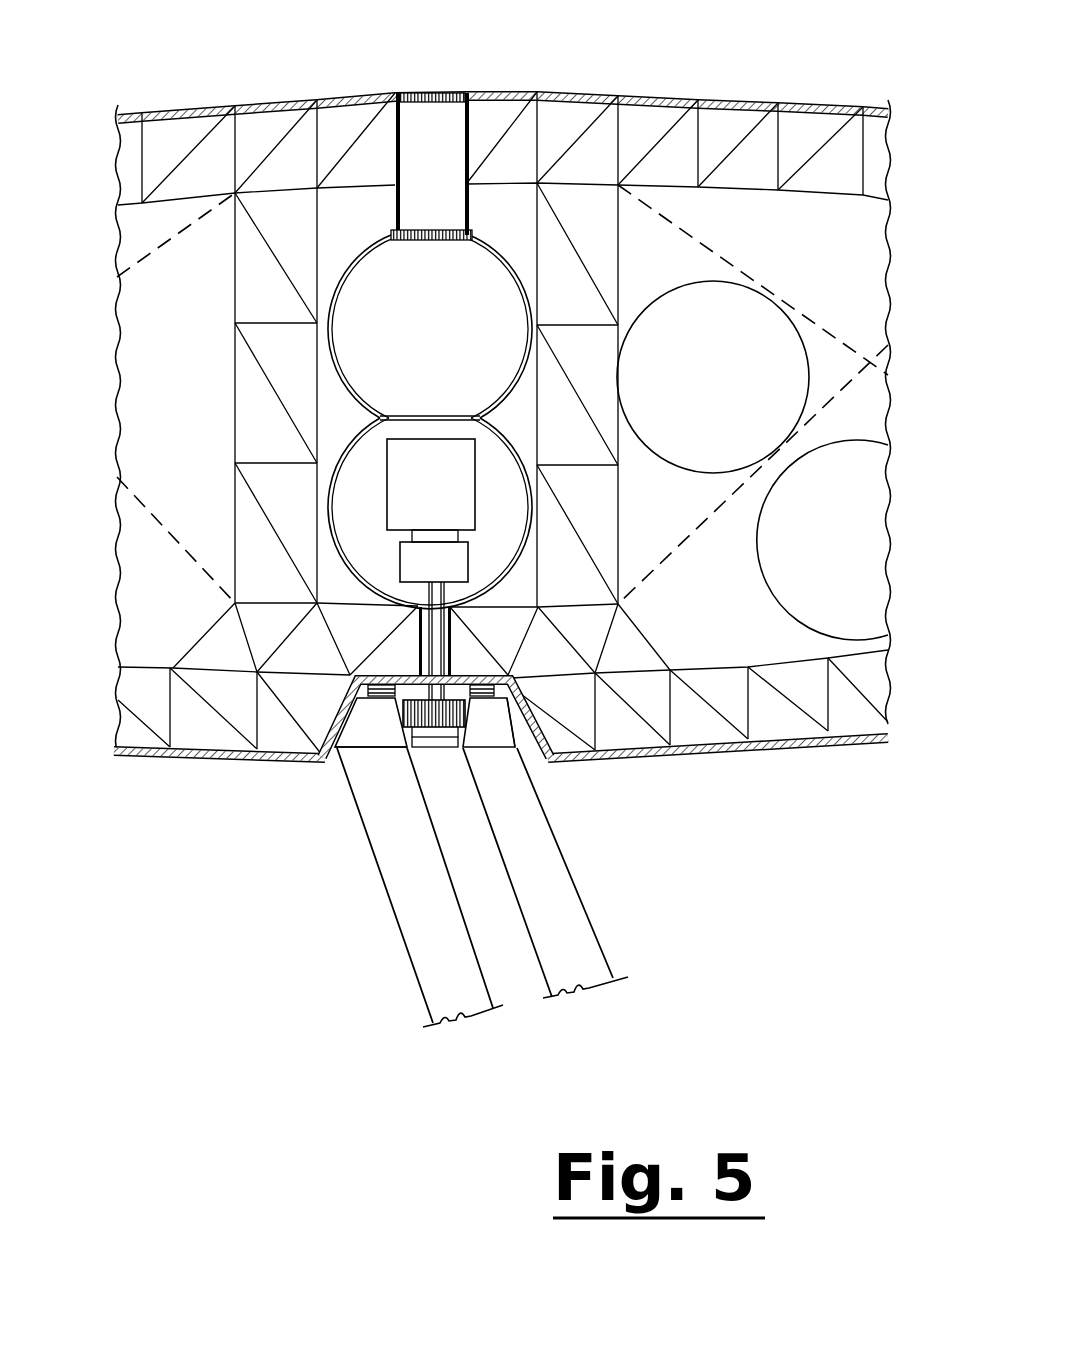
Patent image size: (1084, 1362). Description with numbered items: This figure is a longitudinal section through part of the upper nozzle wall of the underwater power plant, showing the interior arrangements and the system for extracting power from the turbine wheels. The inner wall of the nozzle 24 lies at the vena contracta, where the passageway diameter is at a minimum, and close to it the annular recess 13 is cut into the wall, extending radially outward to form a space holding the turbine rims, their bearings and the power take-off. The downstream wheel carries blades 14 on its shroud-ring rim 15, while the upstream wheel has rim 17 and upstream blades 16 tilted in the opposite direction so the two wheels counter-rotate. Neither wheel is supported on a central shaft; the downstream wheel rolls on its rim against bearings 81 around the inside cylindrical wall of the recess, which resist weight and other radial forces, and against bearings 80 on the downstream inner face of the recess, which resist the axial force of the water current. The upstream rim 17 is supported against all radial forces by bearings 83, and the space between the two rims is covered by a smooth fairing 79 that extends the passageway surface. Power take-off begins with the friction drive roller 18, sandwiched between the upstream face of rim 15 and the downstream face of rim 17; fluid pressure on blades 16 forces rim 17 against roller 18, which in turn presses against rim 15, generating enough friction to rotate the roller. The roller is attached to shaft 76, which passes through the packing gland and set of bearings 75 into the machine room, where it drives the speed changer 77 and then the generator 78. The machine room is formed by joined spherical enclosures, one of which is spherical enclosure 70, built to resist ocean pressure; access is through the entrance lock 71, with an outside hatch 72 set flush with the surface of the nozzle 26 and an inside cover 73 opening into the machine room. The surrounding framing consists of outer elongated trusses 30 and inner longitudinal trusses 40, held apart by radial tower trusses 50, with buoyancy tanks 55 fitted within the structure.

The annular recess 13 is at (338, 716).
The blades 14 is at (593, 910).
The shroud-ring rim 15 is at (492, 750).
The upstream blades 16 is at (417, 973).
The rim 17 is at (365, 730).
The friction drive roller 18 is at (410, 745).
The inner wall of the nozzle 24 is at (172, 760).
The surface of the nozzle 26 is at (210, 108).
The elongated trusses 30 is at (663, 137).
The inner longitudinal trusses 40 is at (715, 712).
The tower trusses 50 is at (235, 306).
The buoyancy tanks 55 is at (663, 470).
The spherical enclosure 70 is at (440, 338).
The entrance lock 71 is at (472, 128).
The outside cover or hatch 72 is at (413, 92).
The inside cover 73 is at (385, 95).
The packing gland and set of bearings 75 is at (452, 630).
The shaft 76 is at (450, 665).
The speed changer 77 is at (478, 564).
The generator 78 is at (444, 498).
The fairing 79 is at (432, 722).
The bearings 80 is at (512, 720).
The bearings 81 is at (497, 686).
The bearings 83 is at (355, 688).